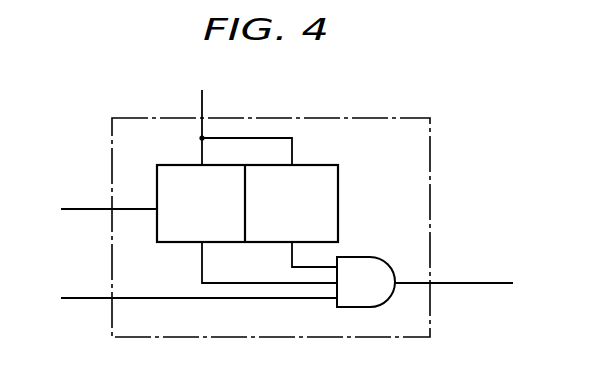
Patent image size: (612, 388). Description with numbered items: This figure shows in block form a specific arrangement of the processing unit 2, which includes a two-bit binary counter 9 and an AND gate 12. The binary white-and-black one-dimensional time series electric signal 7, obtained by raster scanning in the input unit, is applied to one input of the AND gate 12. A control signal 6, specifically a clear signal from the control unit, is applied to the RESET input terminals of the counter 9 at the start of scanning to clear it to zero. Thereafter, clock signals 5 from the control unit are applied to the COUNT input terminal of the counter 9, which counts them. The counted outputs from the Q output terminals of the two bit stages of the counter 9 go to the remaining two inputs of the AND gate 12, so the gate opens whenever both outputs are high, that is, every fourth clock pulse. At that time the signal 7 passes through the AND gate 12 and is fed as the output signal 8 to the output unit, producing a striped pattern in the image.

The processing unit 2 is at (432, 152).
The clock signals 5 is at (86, 208).
The control signal 6 is at (262, 137).
The one-dimensional time series electric signal 7 is at (83, 297).
The output signal 8 is at (466, 282).
The 2-bit binary counter 9 is at (344, 143).
The AND gate 12 is at (370, 307).